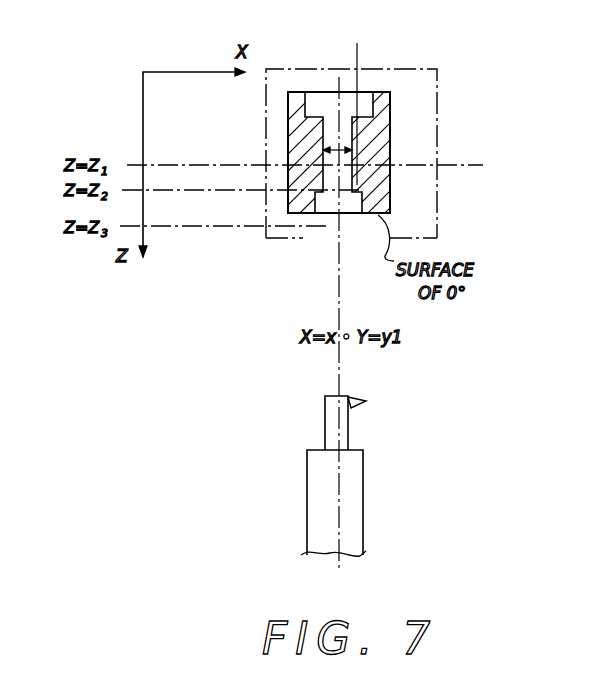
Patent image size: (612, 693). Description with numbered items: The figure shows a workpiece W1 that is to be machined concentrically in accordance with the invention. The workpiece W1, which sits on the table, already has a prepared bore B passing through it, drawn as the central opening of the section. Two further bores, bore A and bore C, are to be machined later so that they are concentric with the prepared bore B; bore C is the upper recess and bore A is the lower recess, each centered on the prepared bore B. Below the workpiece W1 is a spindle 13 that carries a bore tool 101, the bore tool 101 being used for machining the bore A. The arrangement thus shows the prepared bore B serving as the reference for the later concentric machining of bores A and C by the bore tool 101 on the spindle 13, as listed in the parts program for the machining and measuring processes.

The workpiece W1 is at (388, 92).
The bore C is at (310, 92).
The prepared bore B is at (340, 150).
The bore A is at (325, 216).
The spindle 13 is at (307, 469).
The bore tool 101 is at (362, 405).